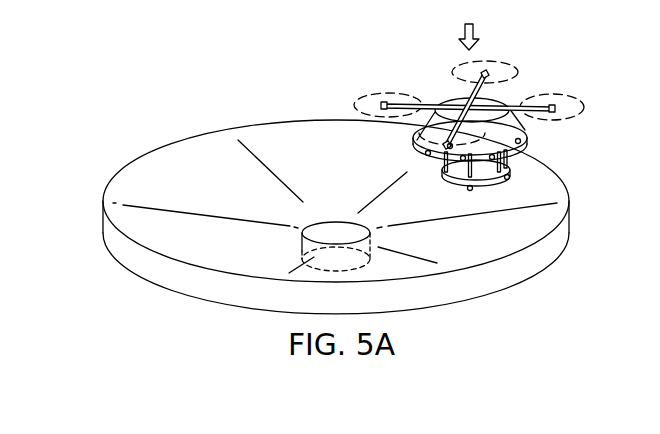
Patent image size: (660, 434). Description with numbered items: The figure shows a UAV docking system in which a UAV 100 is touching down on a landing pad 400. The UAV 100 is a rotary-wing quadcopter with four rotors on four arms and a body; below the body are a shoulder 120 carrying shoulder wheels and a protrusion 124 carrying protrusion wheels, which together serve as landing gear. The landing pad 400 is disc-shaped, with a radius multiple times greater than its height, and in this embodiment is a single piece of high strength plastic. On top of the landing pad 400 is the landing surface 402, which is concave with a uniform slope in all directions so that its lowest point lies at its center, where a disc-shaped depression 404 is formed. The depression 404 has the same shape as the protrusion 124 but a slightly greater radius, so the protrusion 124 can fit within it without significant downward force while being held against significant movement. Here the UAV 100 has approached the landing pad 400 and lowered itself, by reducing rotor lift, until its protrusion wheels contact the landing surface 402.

The UAV 100 is at (484, 133).
The shoulder 120 is at (520, 137).
The protrusion 124 is at (488, 183).
The landing pad 400 is at (336, 224).
The landing surface 402 is at (208, 158).
The depression 404 is at (300, 238).